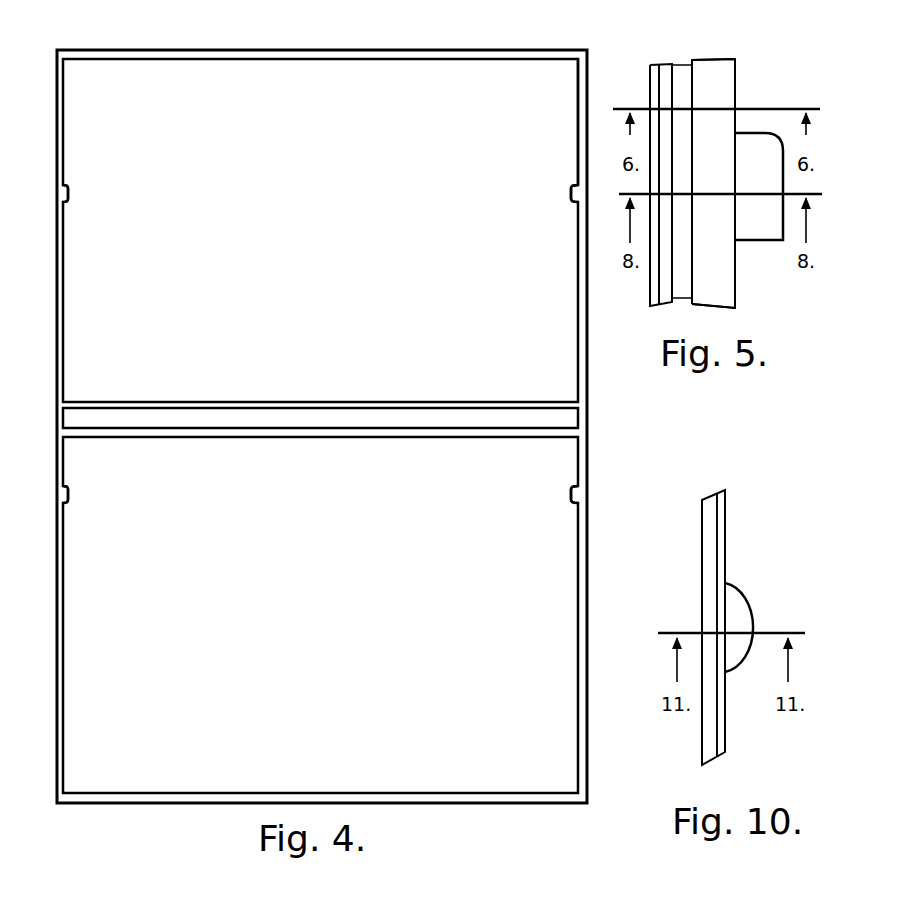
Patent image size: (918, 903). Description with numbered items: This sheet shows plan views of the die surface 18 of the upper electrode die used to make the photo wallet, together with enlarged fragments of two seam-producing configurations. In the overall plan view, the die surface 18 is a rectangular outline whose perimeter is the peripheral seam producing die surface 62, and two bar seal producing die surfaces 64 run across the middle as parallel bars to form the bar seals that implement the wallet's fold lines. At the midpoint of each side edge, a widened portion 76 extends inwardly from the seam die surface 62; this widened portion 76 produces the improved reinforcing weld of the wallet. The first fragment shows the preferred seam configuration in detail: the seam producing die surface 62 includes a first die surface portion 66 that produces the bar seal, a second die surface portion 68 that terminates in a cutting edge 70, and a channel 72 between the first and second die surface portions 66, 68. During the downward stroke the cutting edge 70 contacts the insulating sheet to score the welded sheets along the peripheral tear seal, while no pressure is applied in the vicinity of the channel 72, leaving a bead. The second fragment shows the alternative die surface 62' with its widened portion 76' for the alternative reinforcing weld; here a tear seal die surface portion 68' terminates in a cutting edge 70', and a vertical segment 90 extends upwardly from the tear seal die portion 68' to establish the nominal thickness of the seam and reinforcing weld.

In FIG. 4, the die surface 18 is at (323, 46).
In FIG. 5, the die surface 18 is at (645, 290).
In FIG. 4, the peripheral seam producing die surface 62 is at (598, 96).
In FIG. 5, the peripheral seam producing die surface 62 is at (692, 158).
In FIG. 4, the bar seal producing die surfaces 64 is at (300, 402).
In FIG. 5, the first die surface portion 66 is at (721, 260).
In FIG. 5, the second die surface portion 68 is at (642, 183).
In FIG. 5, the cutting edge 70 is at (642, 168).
In FIG. 5, the channel 72 is at (680, 86).
In FIG. 4, the widened portion 76 is at (320, 335).
In FIG. 5, the widened portion 76 is at (759, 186).
In FIG. 10, the die surface 62' is at (688, 616).
In FIG. 10, the tear seal die surface portion 68' is at (683, 625).
In FIG. 10, the cutting edge 70' is at (681, 625).
In FIG. 10, the widened portion 76' is at (760, 613).
In FIG. 10, the vertical segment 90 is at (727, 515).